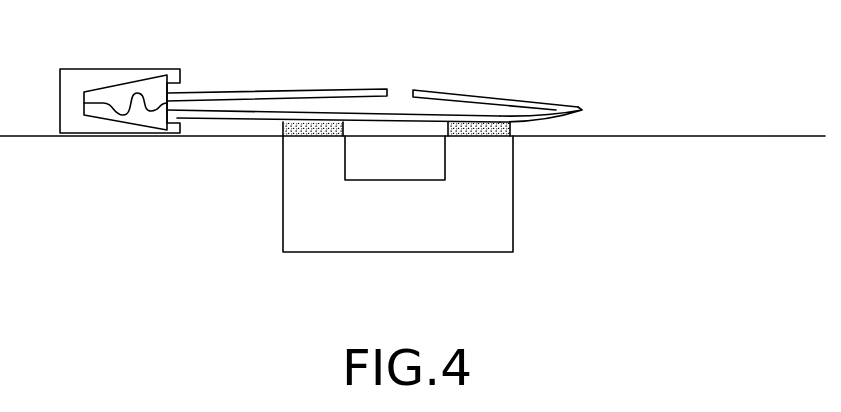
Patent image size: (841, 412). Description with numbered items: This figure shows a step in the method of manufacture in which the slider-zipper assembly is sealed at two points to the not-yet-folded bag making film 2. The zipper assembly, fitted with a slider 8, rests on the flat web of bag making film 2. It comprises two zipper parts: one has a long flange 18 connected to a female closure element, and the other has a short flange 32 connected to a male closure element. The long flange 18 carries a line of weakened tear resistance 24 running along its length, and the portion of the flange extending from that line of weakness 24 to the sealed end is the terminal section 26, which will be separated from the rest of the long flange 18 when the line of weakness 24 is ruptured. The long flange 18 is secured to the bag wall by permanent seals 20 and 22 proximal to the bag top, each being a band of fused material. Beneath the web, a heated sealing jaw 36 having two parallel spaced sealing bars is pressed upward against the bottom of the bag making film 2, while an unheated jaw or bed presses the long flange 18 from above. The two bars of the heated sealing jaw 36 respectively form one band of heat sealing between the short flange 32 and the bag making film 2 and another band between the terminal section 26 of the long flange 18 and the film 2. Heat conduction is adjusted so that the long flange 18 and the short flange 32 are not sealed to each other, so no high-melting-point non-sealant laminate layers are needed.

The bag making film 2 is at (750, 136).
The slider 8 is at (85, 69).
The long flange 18 is at (227, 119).
The permanent seal 20 is at (322, 137).
The permanent seal 22 is at (482, 137).
The line of weakened tear resistance 24 is at (582, 110).
The terminal section 26 is at (463, 93).
The short flange 32 is at (334, 87).
The heated sealing jaw 36 is at (458, 253).